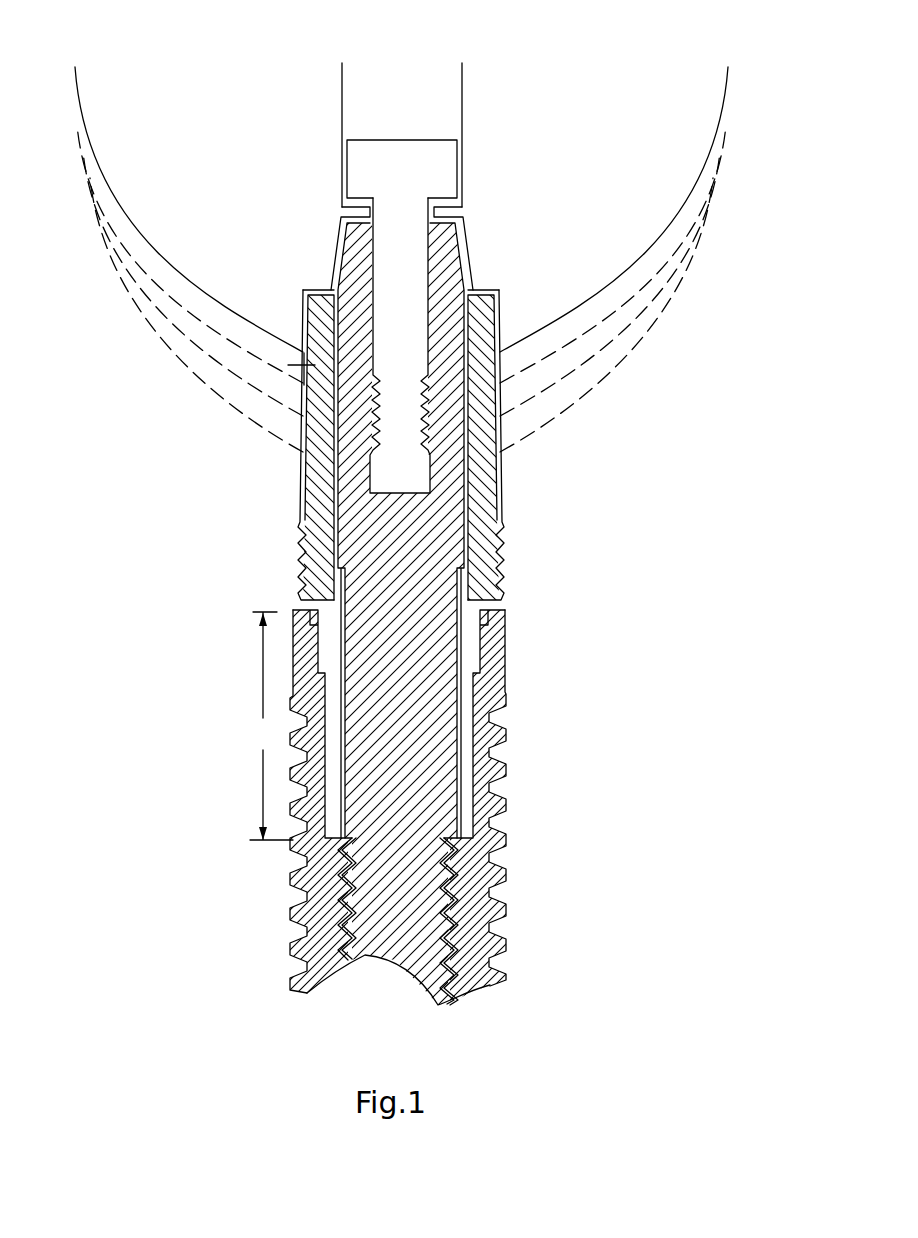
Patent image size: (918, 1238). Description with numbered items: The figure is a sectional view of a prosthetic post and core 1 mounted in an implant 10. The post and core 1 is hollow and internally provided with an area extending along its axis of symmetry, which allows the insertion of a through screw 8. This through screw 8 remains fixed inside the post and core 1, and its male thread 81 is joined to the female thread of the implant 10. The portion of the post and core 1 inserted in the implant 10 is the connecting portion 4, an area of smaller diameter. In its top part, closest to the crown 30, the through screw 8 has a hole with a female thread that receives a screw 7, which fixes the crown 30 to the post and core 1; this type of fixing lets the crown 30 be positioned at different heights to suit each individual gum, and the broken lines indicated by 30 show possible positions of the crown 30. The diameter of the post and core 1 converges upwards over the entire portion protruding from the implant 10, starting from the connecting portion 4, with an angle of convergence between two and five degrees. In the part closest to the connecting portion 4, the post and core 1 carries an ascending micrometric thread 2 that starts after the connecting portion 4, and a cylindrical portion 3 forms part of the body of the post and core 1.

The prosthetic post and core 1 is at (348, 526).
The ascending micrometric thread 2 is at (394, 781).
The cylindrical portion 3 is at (303, 467).
The connecting portion 4 is at (271, 726).
The screw 7 is at (432, 157).
The through screw 8 is at (465, 614).
The implant 10 is at (473, 860).
The crown 30 is at (613, 288).
The male thread 81 is at (450, 905).